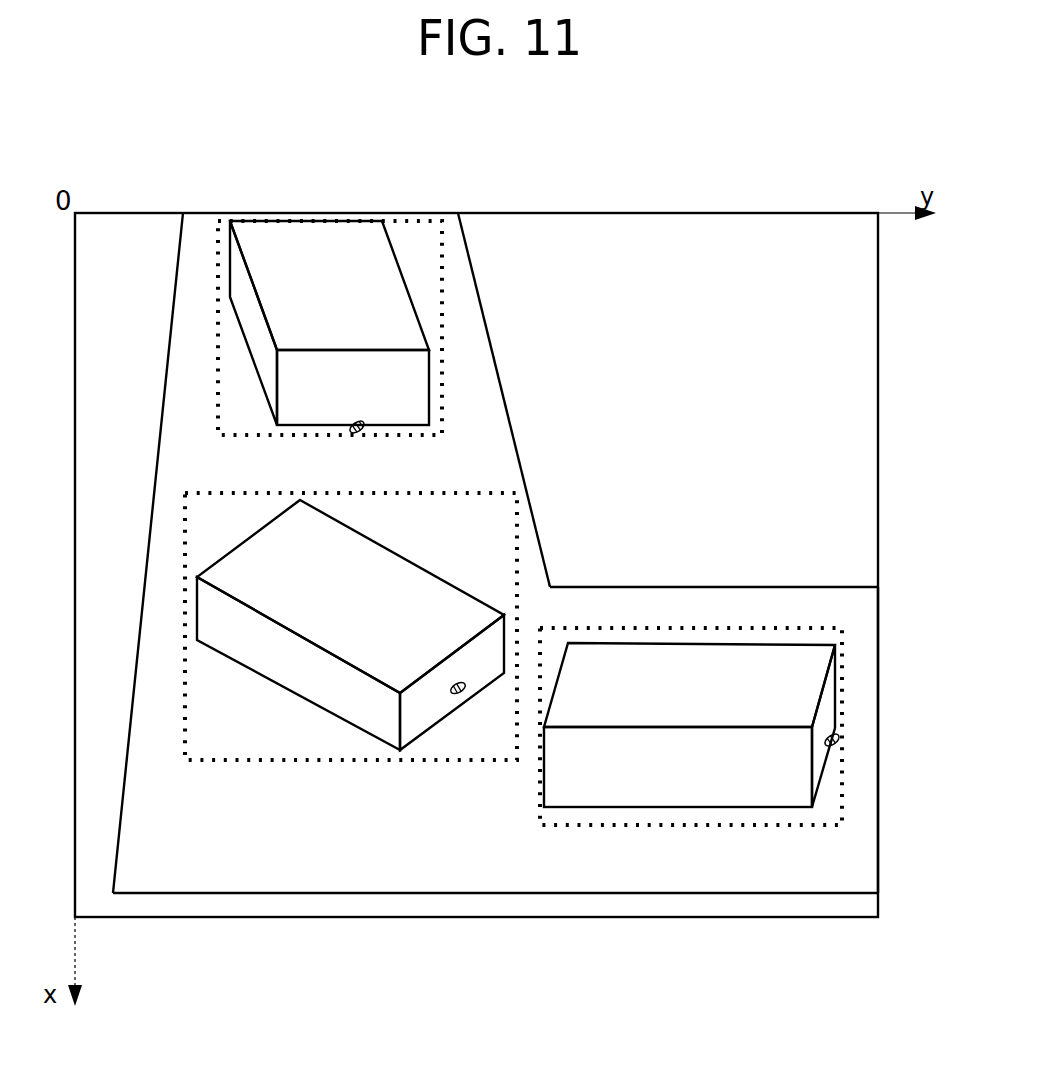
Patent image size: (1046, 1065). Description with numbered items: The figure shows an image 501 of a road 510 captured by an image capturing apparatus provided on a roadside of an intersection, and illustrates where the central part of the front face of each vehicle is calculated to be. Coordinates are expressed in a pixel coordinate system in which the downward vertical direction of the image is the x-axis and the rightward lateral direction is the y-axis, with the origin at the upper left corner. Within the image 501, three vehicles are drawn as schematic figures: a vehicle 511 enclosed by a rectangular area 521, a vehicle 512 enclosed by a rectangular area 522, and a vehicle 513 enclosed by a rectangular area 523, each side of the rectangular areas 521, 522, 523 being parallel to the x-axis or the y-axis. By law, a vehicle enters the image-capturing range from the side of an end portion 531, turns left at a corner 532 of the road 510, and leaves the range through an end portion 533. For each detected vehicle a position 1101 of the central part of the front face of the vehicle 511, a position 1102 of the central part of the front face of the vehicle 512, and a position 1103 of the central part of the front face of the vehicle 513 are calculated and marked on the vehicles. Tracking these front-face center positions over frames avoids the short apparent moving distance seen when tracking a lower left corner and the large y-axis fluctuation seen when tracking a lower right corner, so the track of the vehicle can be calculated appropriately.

The image 501 is at (530, 213).
The road 510 is at (510, 417).
The end portion 531 is at (200, 213).
The corner 532 is at (552, 585).
The end portion 533 is at (878, 632).
The vehicle 511 is at (385, 268).
The vehicle 512 is at (440, 602).
The vehicle 513 is at (757, 663).
The rectangular area 521 is at (450, 325).
The rectangular area 522 is at (222, 762).
The rectangular area 523 is at (537, 800).
The position of the central part of the front face of the vehicle 1101 is at (362, 436).
The position of the central part of the front face of the vehicle 1102 is at (452, 692).
The position of the central part of the front face of the vehicle 1103 is at (840, 740).